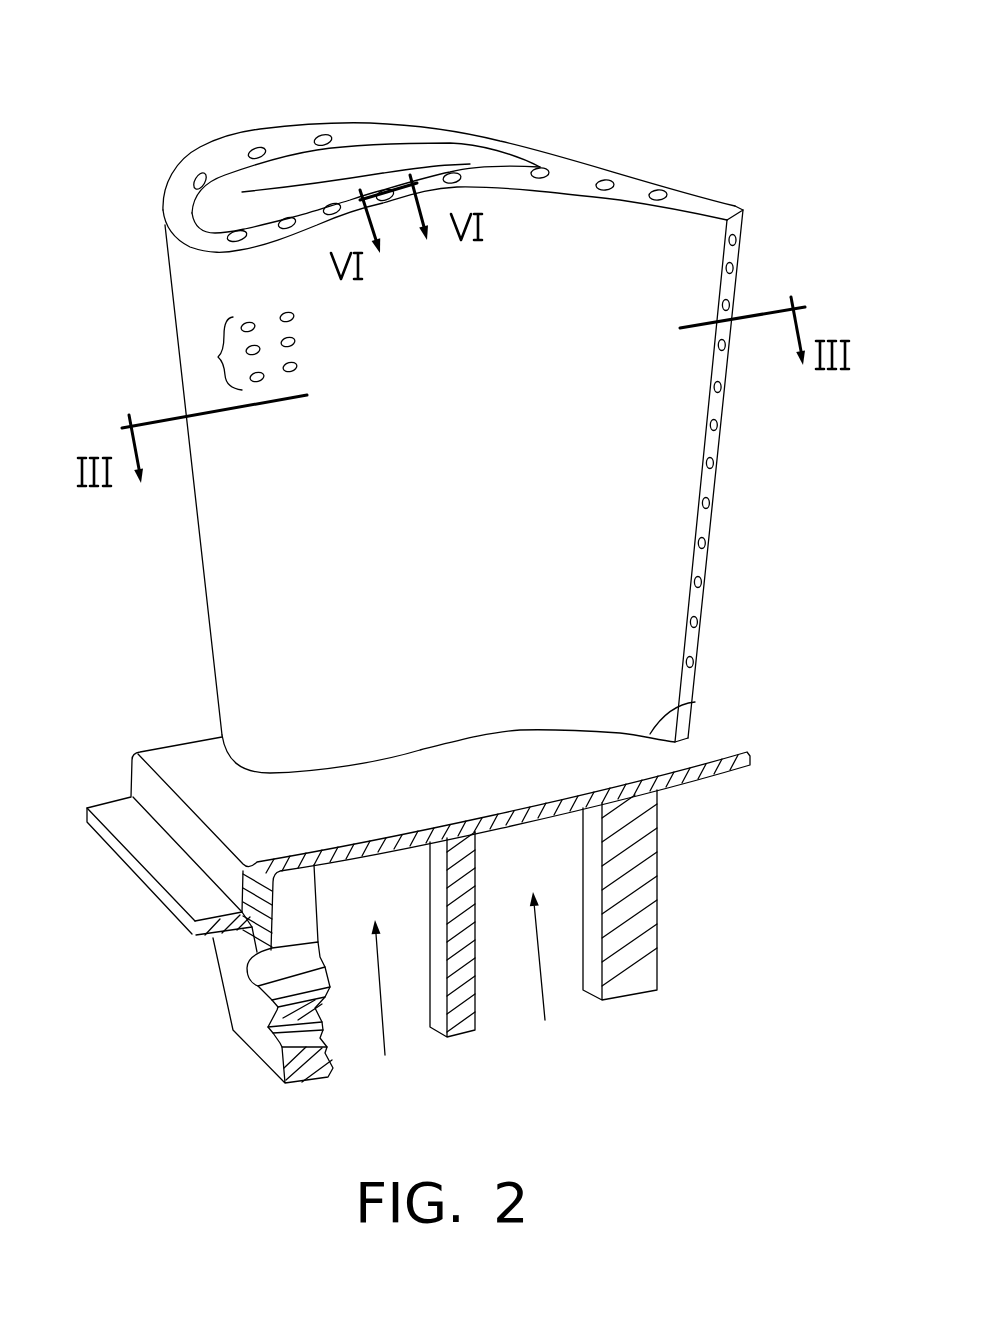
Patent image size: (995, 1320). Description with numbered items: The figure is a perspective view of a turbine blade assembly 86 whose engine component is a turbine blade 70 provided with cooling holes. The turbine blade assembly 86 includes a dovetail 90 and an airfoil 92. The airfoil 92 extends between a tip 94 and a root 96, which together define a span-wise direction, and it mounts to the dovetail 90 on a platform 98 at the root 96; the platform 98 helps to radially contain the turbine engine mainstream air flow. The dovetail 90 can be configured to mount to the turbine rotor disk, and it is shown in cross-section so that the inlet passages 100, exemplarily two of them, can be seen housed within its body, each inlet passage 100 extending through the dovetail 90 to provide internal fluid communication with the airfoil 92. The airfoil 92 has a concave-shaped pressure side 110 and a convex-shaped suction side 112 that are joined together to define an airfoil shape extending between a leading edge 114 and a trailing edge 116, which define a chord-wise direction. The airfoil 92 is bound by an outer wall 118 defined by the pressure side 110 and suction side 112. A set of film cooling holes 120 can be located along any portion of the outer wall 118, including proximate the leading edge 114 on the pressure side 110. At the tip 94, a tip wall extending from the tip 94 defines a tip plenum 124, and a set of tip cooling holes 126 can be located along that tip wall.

The turbine blade 70 is at (255, 510).
The turbine blade assembly 86 is at (741, 43).
The dovetail 90 is at (247, 1003).
The airfoil 92 is at (290, 112).
The tip 94 is at (237, 185).
The root 96 is at (695, 702).
The platform 98 is at (180, 752).
The inlet passage 100 is at (410, 1068).
The pressure side 110 is at (258, 255).
The suction side 112 is at (483, 133).
The leading edge 114 is at (176, 241).
The trailing edge 116 is at (744, 212).
The outer wall 118 is at (479, 535).
The film cooling holes 120 is at (218, 358).
The tip plenum 124 is at (287, 212).
The tip cooling holes 126 is at (385, 196).